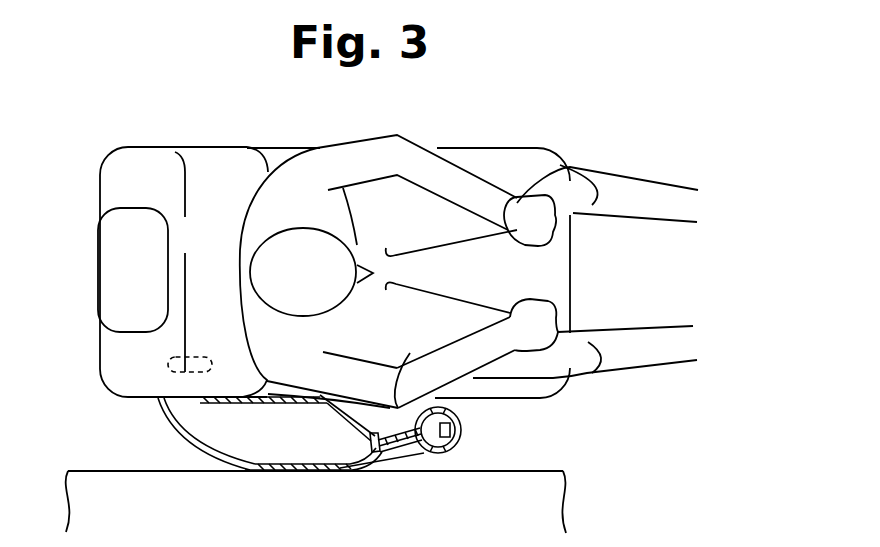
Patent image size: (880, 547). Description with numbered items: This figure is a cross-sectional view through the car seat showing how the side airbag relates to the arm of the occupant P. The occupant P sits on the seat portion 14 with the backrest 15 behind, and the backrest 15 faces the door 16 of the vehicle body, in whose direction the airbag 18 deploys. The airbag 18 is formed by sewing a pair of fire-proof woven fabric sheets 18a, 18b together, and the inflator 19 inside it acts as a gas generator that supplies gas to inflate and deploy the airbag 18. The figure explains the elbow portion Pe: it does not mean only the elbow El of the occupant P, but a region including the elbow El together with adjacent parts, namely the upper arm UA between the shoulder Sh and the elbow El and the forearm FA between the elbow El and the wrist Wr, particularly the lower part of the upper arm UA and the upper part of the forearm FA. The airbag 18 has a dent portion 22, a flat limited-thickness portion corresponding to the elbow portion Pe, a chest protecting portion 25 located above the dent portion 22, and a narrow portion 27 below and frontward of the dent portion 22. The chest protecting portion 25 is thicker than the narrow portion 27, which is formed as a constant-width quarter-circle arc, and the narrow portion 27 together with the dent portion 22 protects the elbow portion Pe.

The seat portion 14 is at (483, 148).
The backrest 15 is at (210, 151).
The door 16 is at (549, 470).
The airbag 18 is at (273, 461).
The fabric sheet 18a is at (318, 470).
The fabric sheet 18b is at (250, 405).
The inflator 19 is at (173, 371).
The dent portion 22 is at (407, 458).
The chest protecting portion 25 is at (177, 442).
The narrow portion 27 is at (452, 461).
The occupant P is at (348, 151).
The shoulder Sh is at (285, 165).
The elbow El is at (398, 141).
The upper arm UA is at (367, 172).
The forearm FA is at (487, 203).
The wrist Wr is at (572, 168).
The elbow portion Pe is at (407, 365).